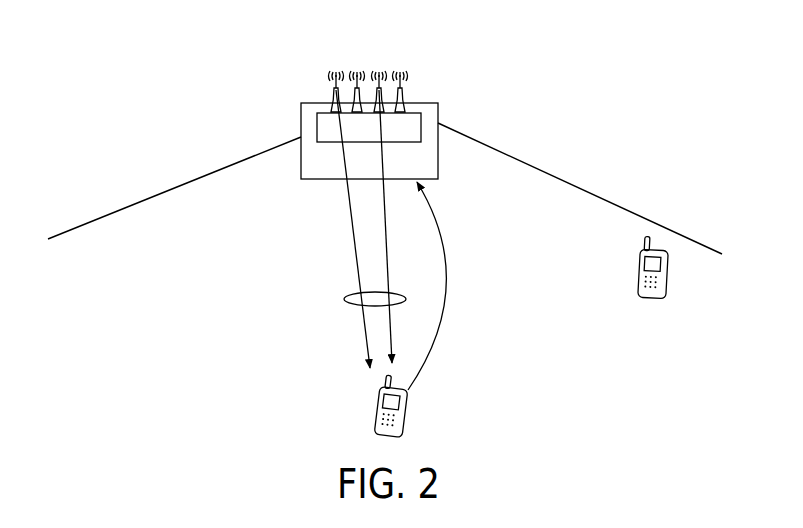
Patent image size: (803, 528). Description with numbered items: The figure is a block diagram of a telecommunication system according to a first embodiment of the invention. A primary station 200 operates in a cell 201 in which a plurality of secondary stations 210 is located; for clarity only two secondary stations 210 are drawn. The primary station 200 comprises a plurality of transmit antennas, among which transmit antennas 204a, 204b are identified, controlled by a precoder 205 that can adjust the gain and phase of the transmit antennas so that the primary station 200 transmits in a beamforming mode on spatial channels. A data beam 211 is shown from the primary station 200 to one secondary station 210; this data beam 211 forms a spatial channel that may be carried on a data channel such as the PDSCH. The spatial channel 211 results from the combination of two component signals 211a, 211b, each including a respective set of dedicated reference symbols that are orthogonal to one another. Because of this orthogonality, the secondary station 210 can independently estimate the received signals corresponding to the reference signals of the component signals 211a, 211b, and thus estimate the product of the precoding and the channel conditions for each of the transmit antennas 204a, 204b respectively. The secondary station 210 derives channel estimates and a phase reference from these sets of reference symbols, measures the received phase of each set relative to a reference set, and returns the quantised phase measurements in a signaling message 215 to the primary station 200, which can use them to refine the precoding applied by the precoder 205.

The primary station 200 is at (339, 117).
The cell 201 is at (570, 202).
The transmit antenna 204a is at (336, 88).
The transmit antenna 204b is at (378, 70).
The precoder 205 is at (327, 143).
The secondary station 210 is at (408, 408).
The data beam 211 is at (343, 298).
The component signal 211a is at (353, 235).
The component signal 211b is at (387, 258).
The signaling message 215 is at (445, 257).